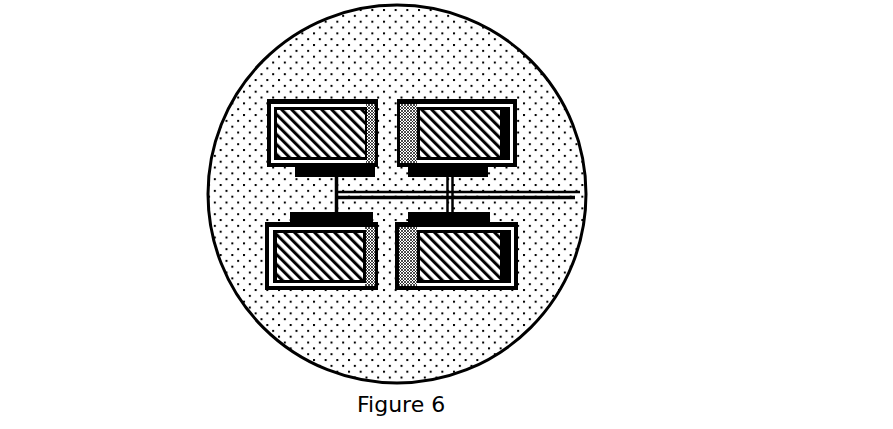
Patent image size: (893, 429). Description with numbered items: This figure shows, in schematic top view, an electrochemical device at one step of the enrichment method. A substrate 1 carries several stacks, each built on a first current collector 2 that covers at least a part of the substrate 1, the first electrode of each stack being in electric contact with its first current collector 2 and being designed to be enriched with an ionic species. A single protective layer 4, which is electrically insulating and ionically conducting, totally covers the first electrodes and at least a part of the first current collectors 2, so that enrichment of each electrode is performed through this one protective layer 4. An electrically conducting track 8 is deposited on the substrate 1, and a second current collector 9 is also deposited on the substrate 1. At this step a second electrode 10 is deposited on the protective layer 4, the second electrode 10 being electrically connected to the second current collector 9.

The substrate 1 is at (262, 65).
The first current collector 2 is at (343, 235).
The protective layer 4 is at (477, 99).
The electrically conducting track 8 is at (578, 193).
The second current collector 9 is at (267, 117).
The second electrode 10 is at (478, 275).